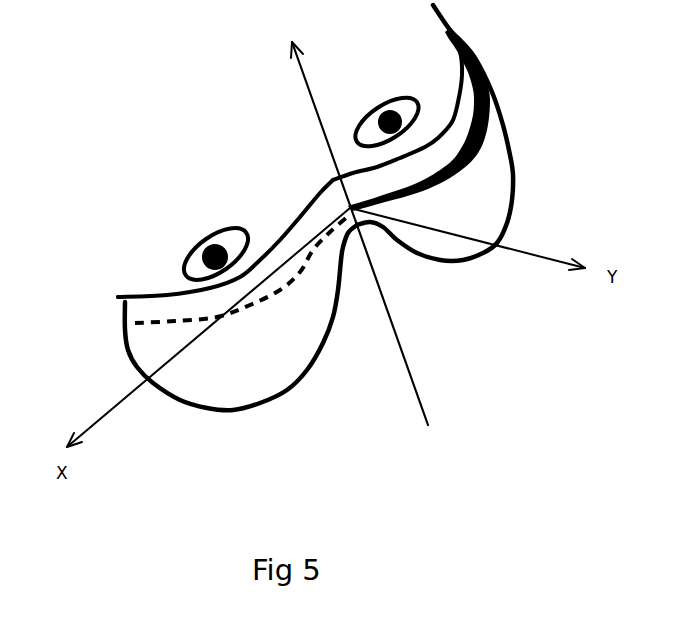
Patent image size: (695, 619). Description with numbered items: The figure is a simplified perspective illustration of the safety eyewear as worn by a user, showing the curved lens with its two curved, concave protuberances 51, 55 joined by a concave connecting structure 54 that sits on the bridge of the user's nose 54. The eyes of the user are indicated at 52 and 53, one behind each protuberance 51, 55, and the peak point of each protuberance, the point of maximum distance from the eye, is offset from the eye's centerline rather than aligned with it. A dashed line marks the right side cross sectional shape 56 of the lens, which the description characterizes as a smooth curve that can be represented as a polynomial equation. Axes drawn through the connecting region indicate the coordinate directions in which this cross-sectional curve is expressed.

The first lens portion 51 is at (282, 397).
The first eye marker 52 is at (217, 238).
The second eye marker 53 is at (397, 97).
The nose 54 is at (345, 197).
The second lens portion 55 is at (278, 335).
The right side cross sectional shape 56 is at (153, 320).